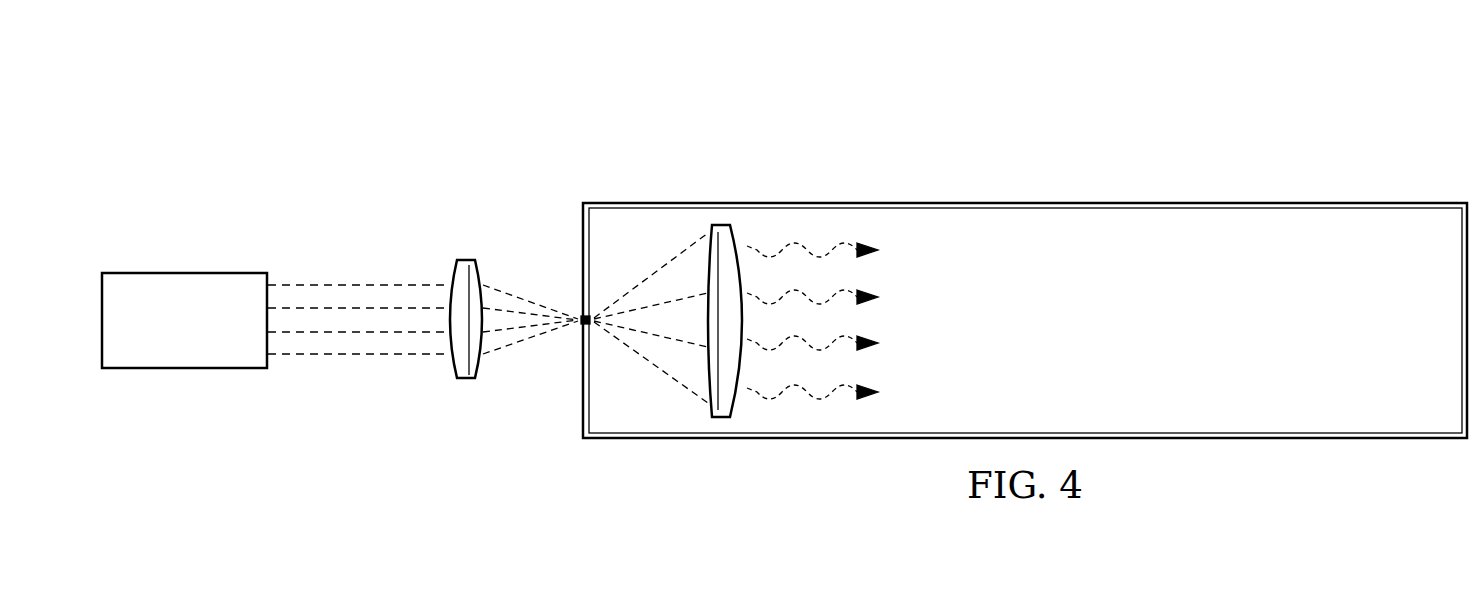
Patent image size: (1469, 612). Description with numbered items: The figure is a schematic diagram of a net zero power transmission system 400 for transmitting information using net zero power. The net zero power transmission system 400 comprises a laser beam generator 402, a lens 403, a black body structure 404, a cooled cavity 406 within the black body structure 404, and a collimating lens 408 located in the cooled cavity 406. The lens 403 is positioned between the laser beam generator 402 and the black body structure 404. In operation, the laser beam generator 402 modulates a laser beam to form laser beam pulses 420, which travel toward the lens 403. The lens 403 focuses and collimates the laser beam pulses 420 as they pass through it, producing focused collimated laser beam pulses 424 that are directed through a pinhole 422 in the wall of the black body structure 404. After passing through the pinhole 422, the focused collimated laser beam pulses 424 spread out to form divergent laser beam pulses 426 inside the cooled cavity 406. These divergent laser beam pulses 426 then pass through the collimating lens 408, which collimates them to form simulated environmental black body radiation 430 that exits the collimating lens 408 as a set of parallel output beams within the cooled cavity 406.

The net zero power transmission system 400 is at (420, 101).
The laser beam generator 402 is at (185, 273).
The laser beam pulses 420 is at (337, 263).
The lens 403 is at (465, 260).
The focused collimated laser beam pulses 424 is at (525, 299).
The pinhole 422 is at (585, 325).
The black body structure 404 is at (1112, 203).
The cooled cavity 406 is at (1241, 338).
The divergent laser beam pulses 426 is at (652, 278).
The collimating lens 408 is at (738, 242).
The simulated environmental black body radiation 430 is at (903, 383).